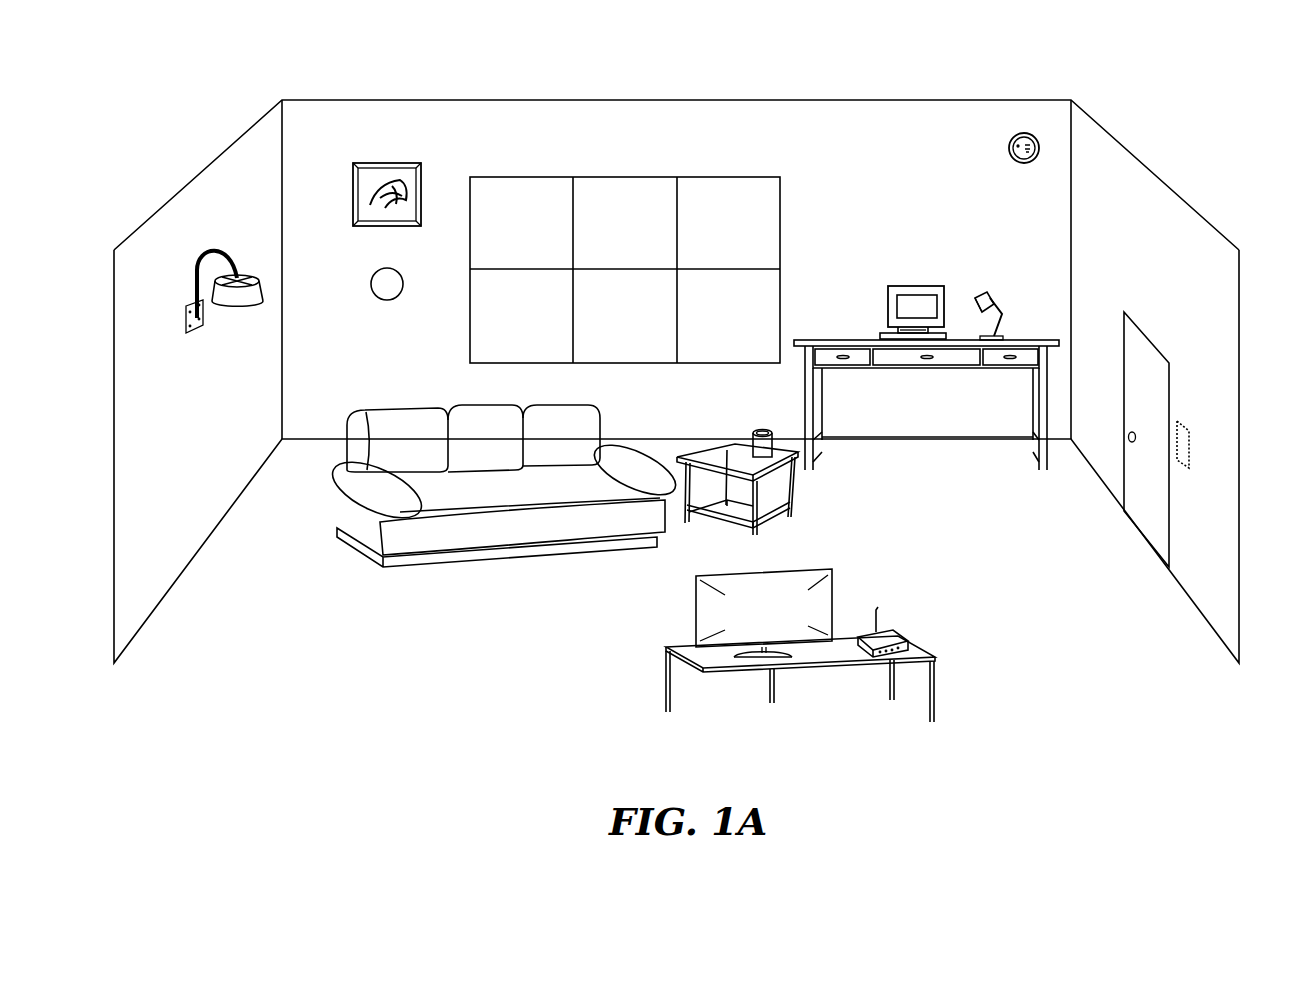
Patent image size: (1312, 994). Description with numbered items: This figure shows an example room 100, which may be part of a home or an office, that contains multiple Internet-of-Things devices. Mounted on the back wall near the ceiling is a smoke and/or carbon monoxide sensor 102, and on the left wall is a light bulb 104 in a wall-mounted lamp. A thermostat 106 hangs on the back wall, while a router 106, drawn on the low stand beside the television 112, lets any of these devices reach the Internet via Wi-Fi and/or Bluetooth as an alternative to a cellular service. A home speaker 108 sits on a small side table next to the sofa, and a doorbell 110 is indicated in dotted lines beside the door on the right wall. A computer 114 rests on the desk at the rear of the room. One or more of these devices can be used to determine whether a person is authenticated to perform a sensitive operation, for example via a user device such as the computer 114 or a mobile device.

The room 100 is at (1178, 101).
The smoke and/or carbon monoxide sensor 102 is at (1027, 132).
The light bulb 104 is at (243, 310).
The thermostat 106 is at (372, 286).
The home speaker 108 is at (745, 436).
The doorbell 110 is at (1189, 452).
The television 112 is at (690, 612).
The computer 114 is at (912, 283).